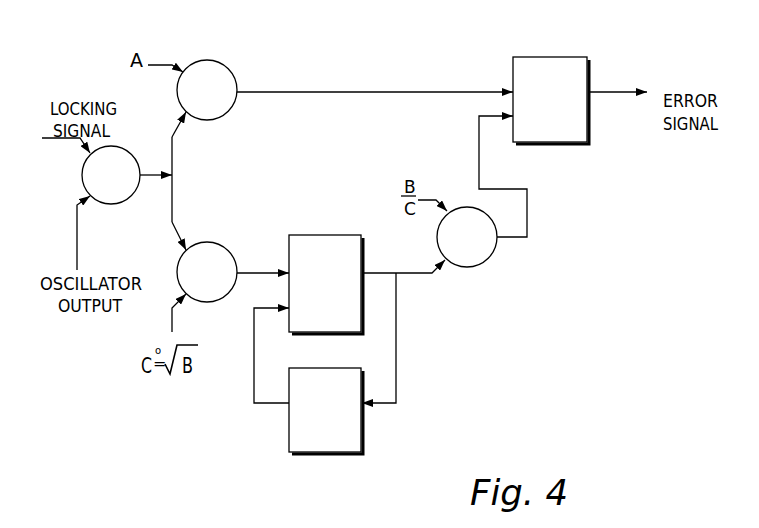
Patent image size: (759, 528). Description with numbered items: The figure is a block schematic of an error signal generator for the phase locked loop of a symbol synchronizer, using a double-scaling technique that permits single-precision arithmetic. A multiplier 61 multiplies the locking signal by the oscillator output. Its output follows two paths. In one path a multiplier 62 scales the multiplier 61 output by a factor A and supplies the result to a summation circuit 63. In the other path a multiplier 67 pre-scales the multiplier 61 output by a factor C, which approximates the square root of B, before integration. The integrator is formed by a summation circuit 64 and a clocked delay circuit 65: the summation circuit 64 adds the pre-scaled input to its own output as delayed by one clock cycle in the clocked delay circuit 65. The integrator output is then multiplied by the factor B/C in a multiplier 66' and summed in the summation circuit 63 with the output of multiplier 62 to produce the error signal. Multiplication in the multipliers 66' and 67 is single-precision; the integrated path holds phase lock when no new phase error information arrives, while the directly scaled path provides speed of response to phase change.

The multiplier 61 is at (148, 125).
The multiplier 62 is at (233, 69).
The summation circuit 63 is at (563, 57).
The summation circuit 64 is at (307, 235).
The clocked delay circuit 65 is at (337, 453).
The multiplier 66' is at (482, 242).
The multiplier 67 is at (225, 244).